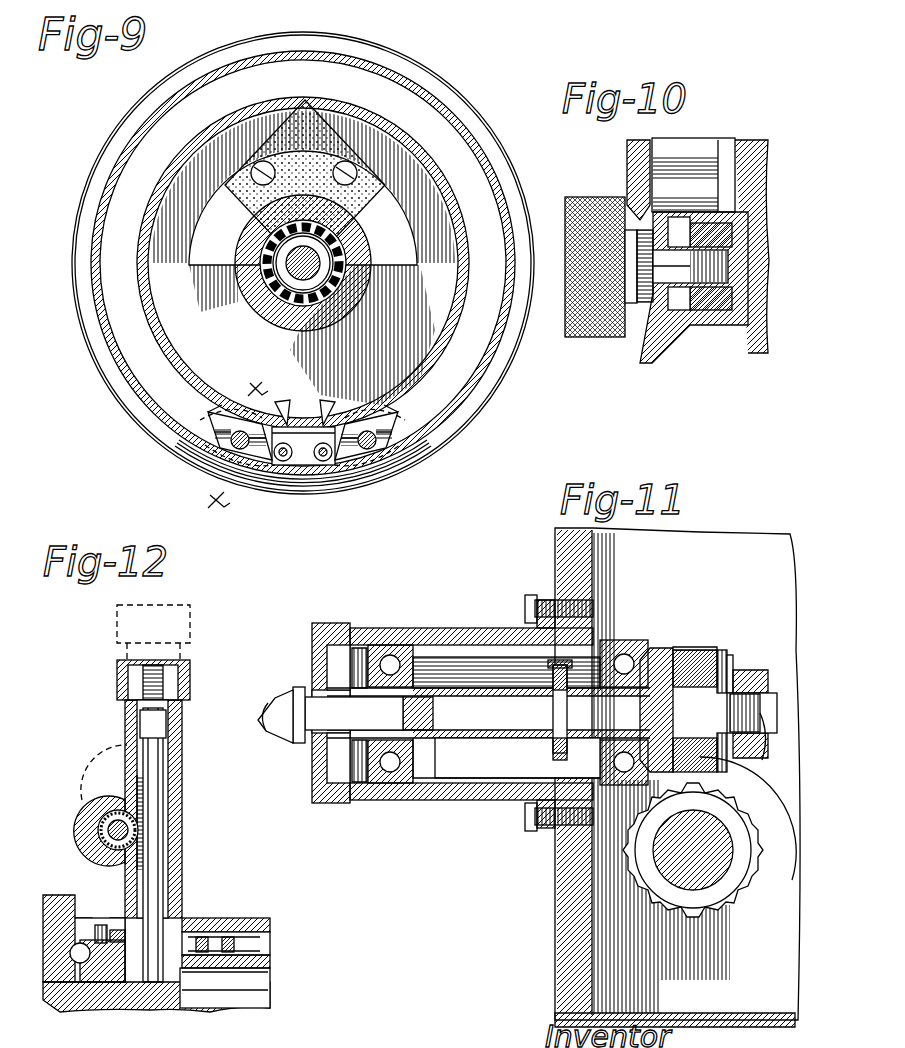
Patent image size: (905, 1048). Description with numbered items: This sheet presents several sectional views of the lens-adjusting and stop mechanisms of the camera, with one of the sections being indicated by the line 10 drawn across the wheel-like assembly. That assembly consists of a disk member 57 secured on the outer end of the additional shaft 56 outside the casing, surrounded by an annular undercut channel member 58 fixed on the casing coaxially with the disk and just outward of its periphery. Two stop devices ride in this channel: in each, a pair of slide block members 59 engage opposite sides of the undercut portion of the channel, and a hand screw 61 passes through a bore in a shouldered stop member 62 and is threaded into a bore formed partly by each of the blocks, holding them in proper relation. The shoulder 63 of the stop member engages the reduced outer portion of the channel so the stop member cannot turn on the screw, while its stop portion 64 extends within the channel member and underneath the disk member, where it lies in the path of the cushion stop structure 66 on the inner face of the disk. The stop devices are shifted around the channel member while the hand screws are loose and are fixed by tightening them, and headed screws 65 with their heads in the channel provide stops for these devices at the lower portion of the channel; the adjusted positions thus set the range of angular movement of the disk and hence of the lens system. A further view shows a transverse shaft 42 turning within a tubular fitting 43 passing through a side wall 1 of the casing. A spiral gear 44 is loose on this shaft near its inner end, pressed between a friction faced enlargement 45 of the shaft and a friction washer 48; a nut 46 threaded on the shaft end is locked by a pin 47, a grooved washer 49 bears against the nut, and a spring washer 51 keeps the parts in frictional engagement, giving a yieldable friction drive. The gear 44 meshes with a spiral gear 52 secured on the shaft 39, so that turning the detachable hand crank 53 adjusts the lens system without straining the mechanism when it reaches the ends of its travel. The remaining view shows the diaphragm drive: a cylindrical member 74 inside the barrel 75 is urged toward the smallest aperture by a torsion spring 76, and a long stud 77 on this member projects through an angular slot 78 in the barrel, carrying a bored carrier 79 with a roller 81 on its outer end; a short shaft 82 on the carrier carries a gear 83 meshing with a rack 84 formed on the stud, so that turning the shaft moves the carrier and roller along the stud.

In FIG. 10, the frame wall 1 is at (768, 156).
In FIG. 9, the section line 10- 10 is at (251, 449).
In FIG. 11, the shaft 39 is at (708, 887).
In FIG. 11, the transverse shaft 42 is at (512, 733).
In FIG. 11, the tubular fitting 43 is at (457, 793).
In FIG. 11, the spiral gear 44 is at (695, 650).
In FIG. 11, the friction faced enlargement 45 is at (658, 650).
In FIG. 11, the nut 46 is at (750, 672).
In FIG. 11, the pin 47 is at (735, 762).
In FIG. 11, the friction washer 48 is at (722, 650).
In FIG. 11, the grooved washer 49 is at (738, 670).
In FIG. 11, the spring washer 51 is at (730, 655).
In FIG. 11, the spiral gear 52 is at (640, 852).
In FIG. 11, the hand crank 53 is at (283, 697).
In FIG. 9, the additional shaft 56 is at (275, 300).
In FIG. 10, the disk member 57 is at (628, 152).
In FIG. 9, the annular undercut channel member 58 is at (428, 92).
In FIG. 10, the annular undercut channel member 58 is at (725, 325).
In FIG. 9, the slide block members 59 is at (210, 425).
In FIG. 10, the slide block members 59 is at (732, 236).
In FIG. 9, the hand screw 61 is at (235, 445).
In FIG. 10, the hand screw 61 is at (585, 337).
In FIG. 9, the stop member 62 is at (208, 435).
In FIG. 10, the stop member 62 is at (644, 302).
In FIG. 10, the shoulder 63 is at (672, 220).
In FIG. 9, the stop portion 64 is at (323, 420).
In FIG. 10, the stop portion 64 is at (690, 170).
In FIG. 9, the headed screws 65 is at (322, 462).
In FIG. 9, the cushion stop structure 66 is at (305, 100).
In FIG. 12, the cylindrical member 74 is at (257, 960).
In FIG. 12, the barrel 75 is at (260, 918).
In FIG. 12, the torsion spring 76 is at (263, 935).
In FIG. 12, the stud 77 is at (157, 778).
In FIG. 12, the angular slot 78 is at (182, 918).
In FIG. 12, the carrier 79 is at (127, 717).
In FIG. 12, the roller 81 is at (128, 673).
In FIG. 12, the short shaft 82 is at (108, 830).
In FIG. 12, the gear 83 is at (88, 808).
In FIG. 12, the rack 84 is at (143, 800).